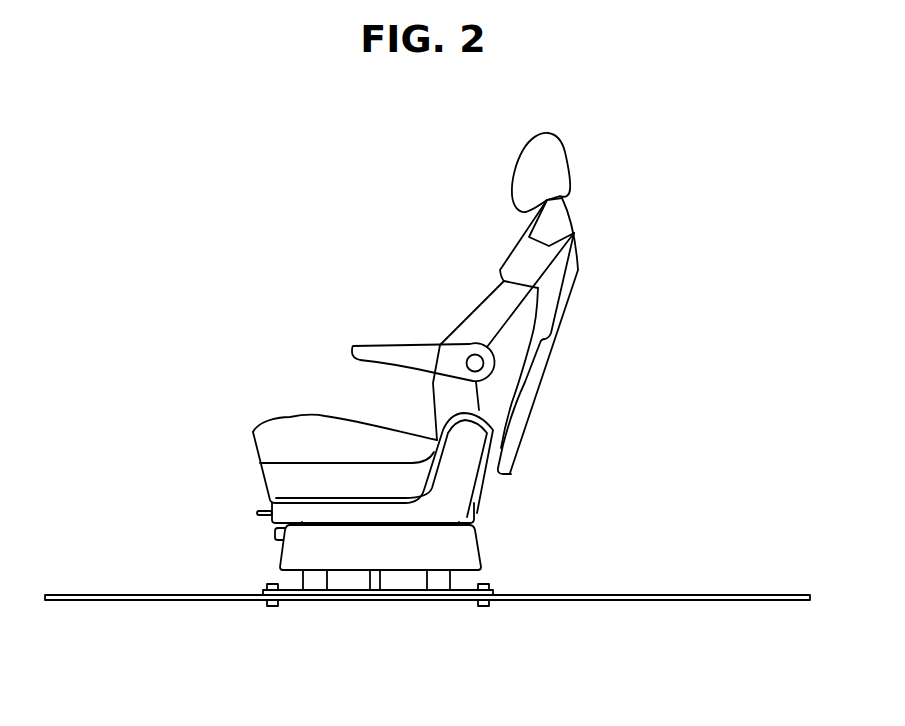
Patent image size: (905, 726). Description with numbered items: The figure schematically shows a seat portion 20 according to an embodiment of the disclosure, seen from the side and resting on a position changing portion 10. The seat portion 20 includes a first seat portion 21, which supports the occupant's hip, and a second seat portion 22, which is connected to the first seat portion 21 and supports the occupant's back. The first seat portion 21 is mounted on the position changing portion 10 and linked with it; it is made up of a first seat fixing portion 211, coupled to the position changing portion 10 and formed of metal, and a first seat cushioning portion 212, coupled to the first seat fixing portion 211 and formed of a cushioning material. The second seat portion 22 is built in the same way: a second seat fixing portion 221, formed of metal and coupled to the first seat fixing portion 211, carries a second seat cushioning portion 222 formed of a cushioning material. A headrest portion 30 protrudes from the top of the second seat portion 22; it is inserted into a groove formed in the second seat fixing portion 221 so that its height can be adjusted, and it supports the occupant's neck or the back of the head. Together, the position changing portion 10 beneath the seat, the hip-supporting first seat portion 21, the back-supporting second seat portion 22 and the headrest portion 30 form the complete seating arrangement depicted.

The position changing portion 10 is at (290, 551).
The seat portion 20 is at (517, 360).
The first seat portion 21 is at (483, 468).
The first seat fixing portion 211 is at (362, 445).
The first seat cushioning portion 212 is at (400, 484).
The second seat portion 22 is at (573, 336).
The second seat fixing portion 221 is at (542, 370).
The second seat cushioning portion 222 is at (505, 300).
The headrest portion 30 is at (560, 165).